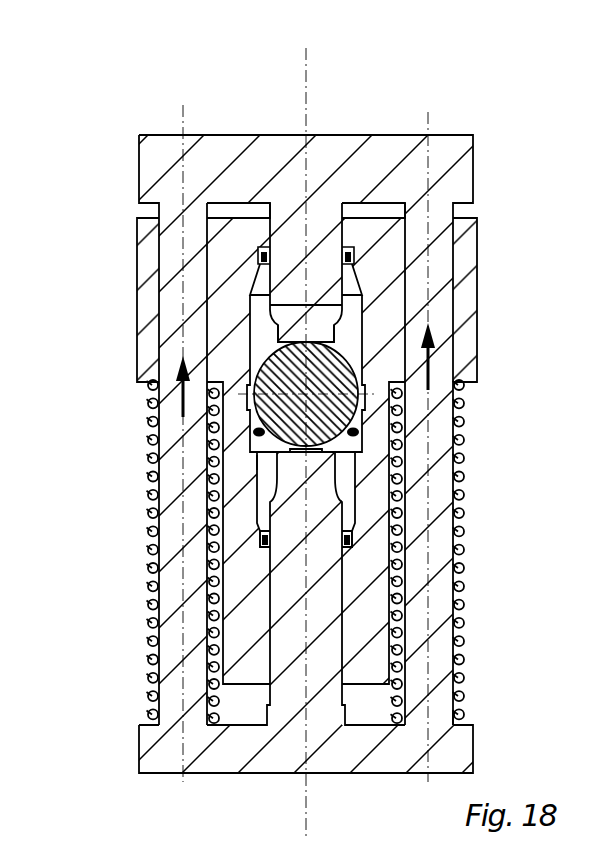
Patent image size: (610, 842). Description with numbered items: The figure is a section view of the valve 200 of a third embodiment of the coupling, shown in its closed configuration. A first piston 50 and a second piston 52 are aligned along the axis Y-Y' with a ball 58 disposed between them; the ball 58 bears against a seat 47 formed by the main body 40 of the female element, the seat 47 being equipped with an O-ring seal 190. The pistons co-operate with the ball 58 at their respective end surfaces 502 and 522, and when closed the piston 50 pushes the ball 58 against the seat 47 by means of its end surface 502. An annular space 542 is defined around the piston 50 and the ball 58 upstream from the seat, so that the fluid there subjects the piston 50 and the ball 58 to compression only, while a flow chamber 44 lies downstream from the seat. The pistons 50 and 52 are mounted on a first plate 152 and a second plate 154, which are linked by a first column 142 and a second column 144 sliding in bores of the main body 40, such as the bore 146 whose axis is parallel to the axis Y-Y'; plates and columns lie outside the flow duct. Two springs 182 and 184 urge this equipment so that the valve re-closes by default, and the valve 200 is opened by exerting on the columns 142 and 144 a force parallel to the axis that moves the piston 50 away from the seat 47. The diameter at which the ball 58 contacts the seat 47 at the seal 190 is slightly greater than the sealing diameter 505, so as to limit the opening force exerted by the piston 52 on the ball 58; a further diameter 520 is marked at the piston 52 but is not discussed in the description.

The valve 200 is at (489, 128).
The first plate 152 is at (263, 155).
The second plate 154 is at (259, 757).
The second column 144 is at (176, 648).
The first column 142 is at (440, 648).
The bore 146 is at (182, 432).
The first piston 50 is at (362, 296).
The sealing section diameter 505 is at (342, 257).
The annular space 542 is at (348, 346).
The main body 40 is at (246, 336).
The end surface 502 is at (250, 345).
The O-ring seal 190 is at (258, 462).
The flow chamber 44 is at (346, 496).
The end surface 522 is at (257, 453).
The lower punch portion 520 is at (342, 541).
The ball 58 is at (336, 392).
The spring 182 is at (153, 583).
The spring 184 is at (462, 410).
The seat 47 is at (398, 478).
The second piston 52 is at (462, 714).